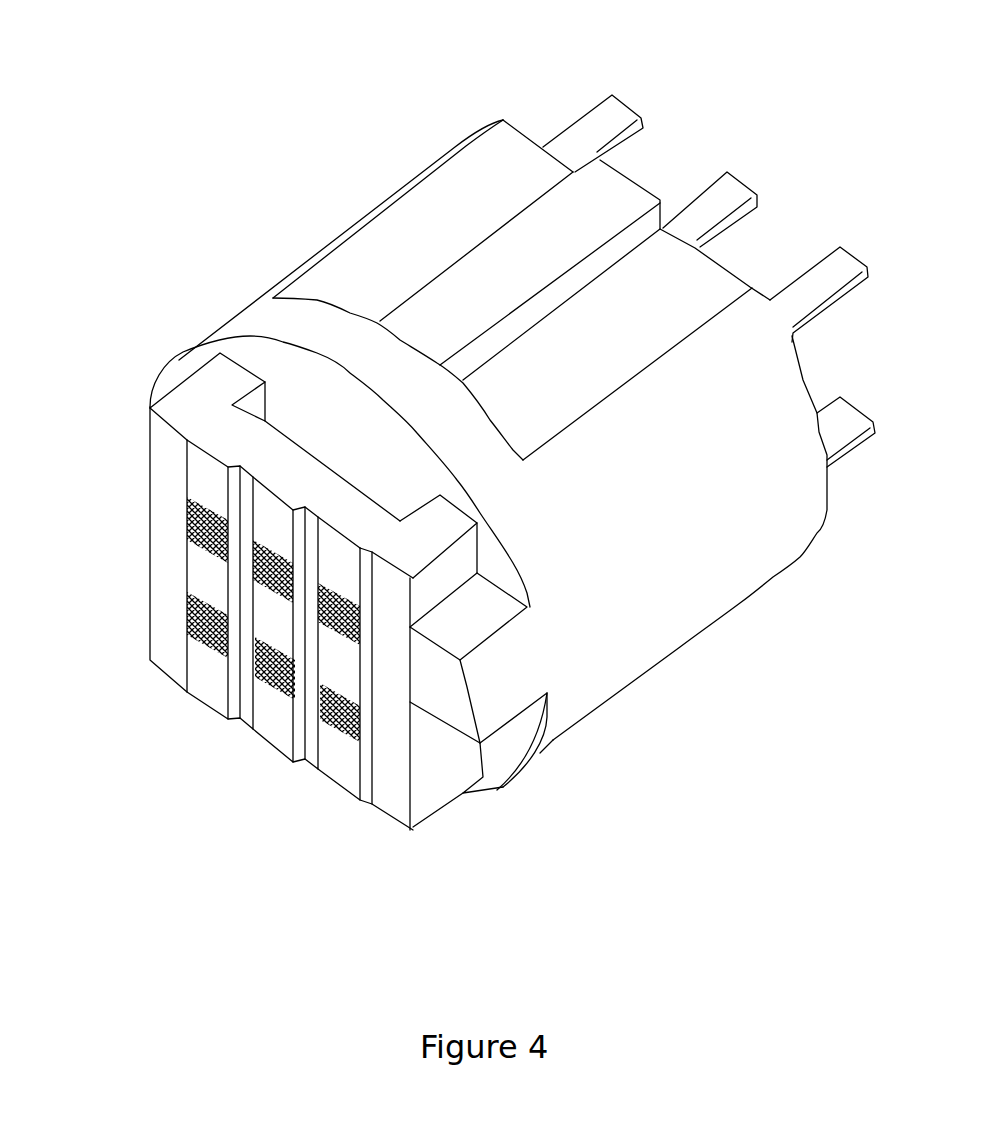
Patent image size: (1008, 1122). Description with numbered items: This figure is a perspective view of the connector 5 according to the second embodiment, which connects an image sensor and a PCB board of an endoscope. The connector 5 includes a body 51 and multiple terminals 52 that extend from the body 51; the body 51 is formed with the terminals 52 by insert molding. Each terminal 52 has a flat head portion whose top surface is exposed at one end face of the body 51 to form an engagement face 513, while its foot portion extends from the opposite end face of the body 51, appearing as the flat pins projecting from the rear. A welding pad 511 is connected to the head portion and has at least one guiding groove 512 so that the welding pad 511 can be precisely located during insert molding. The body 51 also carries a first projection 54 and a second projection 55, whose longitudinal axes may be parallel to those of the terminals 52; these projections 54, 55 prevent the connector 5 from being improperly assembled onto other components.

The connector 5 is at (320, 223).
The body 51 is at (373, 209).
The terminals 52 is at (635, 105).
The first projection 54 is at (510, 273).
The second projection 55 is at (450, 697).
The welding pad 511 is at (186, 520).
The guiding groove 512 is at (300, 513).
The engagement face 513 is at (173, 537).